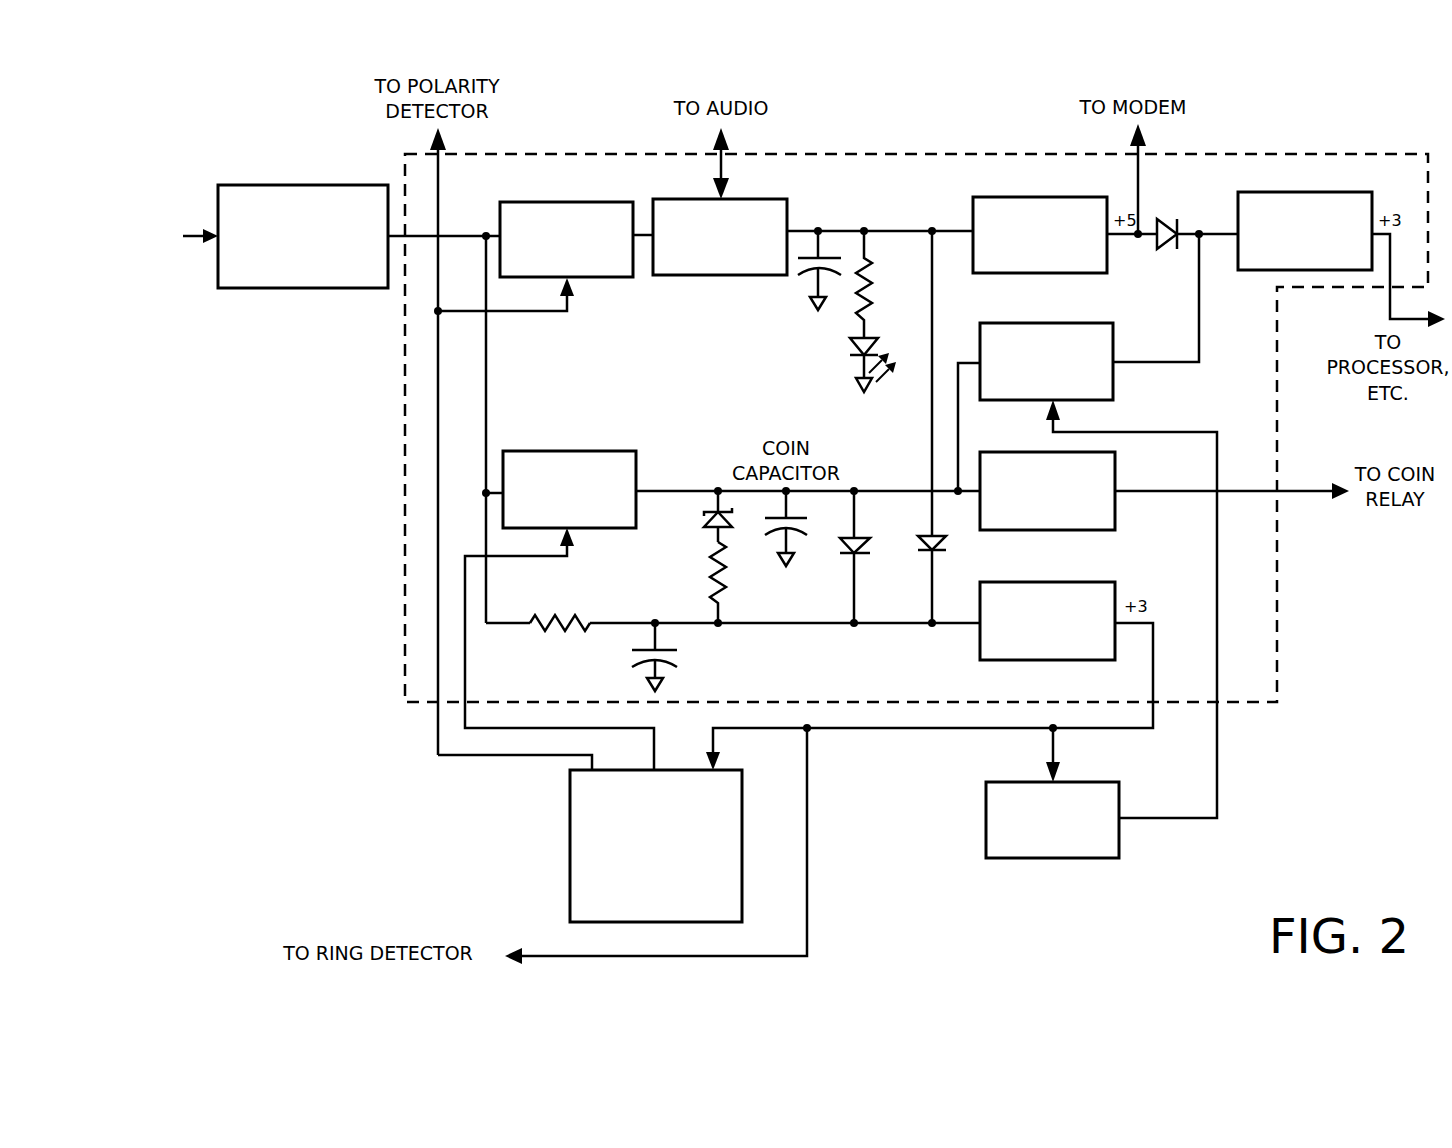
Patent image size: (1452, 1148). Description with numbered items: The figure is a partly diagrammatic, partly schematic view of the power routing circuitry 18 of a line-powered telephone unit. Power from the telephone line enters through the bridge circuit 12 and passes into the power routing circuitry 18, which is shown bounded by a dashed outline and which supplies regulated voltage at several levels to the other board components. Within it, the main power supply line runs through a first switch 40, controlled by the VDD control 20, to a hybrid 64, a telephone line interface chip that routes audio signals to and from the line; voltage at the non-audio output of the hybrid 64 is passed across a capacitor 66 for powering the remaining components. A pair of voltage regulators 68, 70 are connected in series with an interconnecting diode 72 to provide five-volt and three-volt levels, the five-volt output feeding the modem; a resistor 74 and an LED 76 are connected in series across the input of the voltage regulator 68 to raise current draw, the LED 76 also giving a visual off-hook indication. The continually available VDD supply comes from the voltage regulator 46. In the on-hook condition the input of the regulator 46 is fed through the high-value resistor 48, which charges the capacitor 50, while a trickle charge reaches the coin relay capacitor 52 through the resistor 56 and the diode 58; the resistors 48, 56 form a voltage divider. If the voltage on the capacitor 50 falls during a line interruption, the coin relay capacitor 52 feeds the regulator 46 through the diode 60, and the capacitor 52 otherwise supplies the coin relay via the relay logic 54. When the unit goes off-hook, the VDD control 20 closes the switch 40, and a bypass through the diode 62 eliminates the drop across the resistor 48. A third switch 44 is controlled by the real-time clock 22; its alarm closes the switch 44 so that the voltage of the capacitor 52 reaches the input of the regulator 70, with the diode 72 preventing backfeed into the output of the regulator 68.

The bridge circuit 12 is at (240, 288).
The power routing circuitry 18 is at (405, 540).
The VDD control 20 is at (568, 897).
The real-time clock (RTC) 22 is at (985, 822).
The switch 40 is at (598, 278).
The switch 44 is at (1075, 323).
The voltage regulator 46 is at (1030, 582).
The resistor 48 is at (545, 630).
The capacitor 50 is at (677, 657).
The coin relay capacitor 52 is at (795, 538).
The relay logic 54 is at (1115, 530).
The resistor 56 is at (712, 578).
The diode 58 is at (703, 520).
The diode 60 is at (865, 555).
The diode 62 is at (945, 545).
The hybrid 64 is at (682, 277).
The capacitor 66 is at (810, 282).
The voltage regulator 68 is at (1020, 277).
The voltage regulator 70 is at (1333, 192).
The diode 72 is at (1170, 220).
The resistor 74 is at (870, 268).
The LED 76 is at (855, 362).